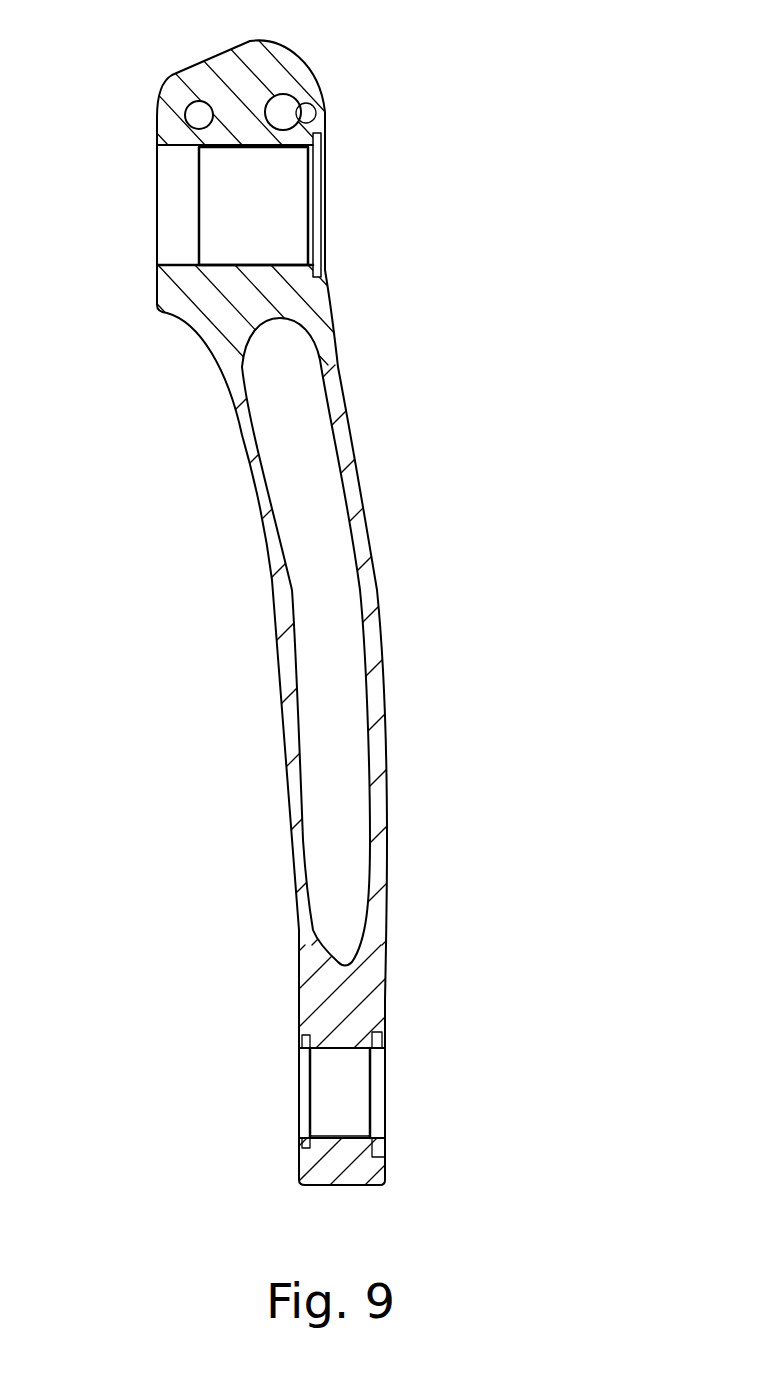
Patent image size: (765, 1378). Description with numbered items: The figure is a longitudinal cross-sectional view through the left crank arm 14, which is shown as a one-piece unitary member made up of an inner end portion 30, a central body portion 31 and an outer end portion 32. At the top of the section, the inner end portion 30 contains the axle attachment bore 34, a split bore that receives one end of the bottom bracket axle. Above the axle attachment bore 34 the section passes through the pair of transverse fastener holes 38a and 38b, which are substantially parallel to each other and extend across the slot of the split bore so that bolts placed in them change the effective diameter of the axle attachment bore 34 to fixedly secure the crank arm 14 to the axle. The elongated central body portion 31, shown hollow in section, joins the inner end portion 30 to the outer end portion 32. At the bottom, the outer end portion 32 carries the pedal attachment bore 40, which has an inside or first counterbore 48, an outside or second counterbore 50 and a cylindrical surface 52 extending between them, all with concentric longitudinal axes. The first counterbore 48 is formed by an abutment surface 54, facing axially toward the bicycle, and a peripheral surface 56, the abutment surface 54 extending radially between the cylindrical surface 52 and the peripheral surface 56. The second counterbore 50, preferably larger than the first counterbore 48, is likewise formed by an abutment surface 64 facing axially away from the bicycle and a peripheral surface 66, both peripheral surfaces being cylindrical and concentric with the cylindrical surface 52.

The crank arm 14 is at (436, 272).
The inner end portion 30 is at (240, 80).
The central body portion 31 is at (363, 578).
The outer end portion 32 is at (347, 1020).
The axle attachment bore 34 is at (257, 213).
The transverse fastener hole 38a is at (287, 115).
The transverse fastener hole 38b is at (198, 114).
The pedal attachment bore 40 is at (335, 1098).
The first counterbore 48 is at (308, 1070).
The second counterbore 50 is at (377, 1080).
The cylindrical surface 52 is at (335, 1137).
The abutment surface 54 is at (300, 1142).
The peripheral surface 56 is at (300, 1053).
The abutment surface 64 is at (383, 1147).
The peripheral surface 66 is at (381, 1044).